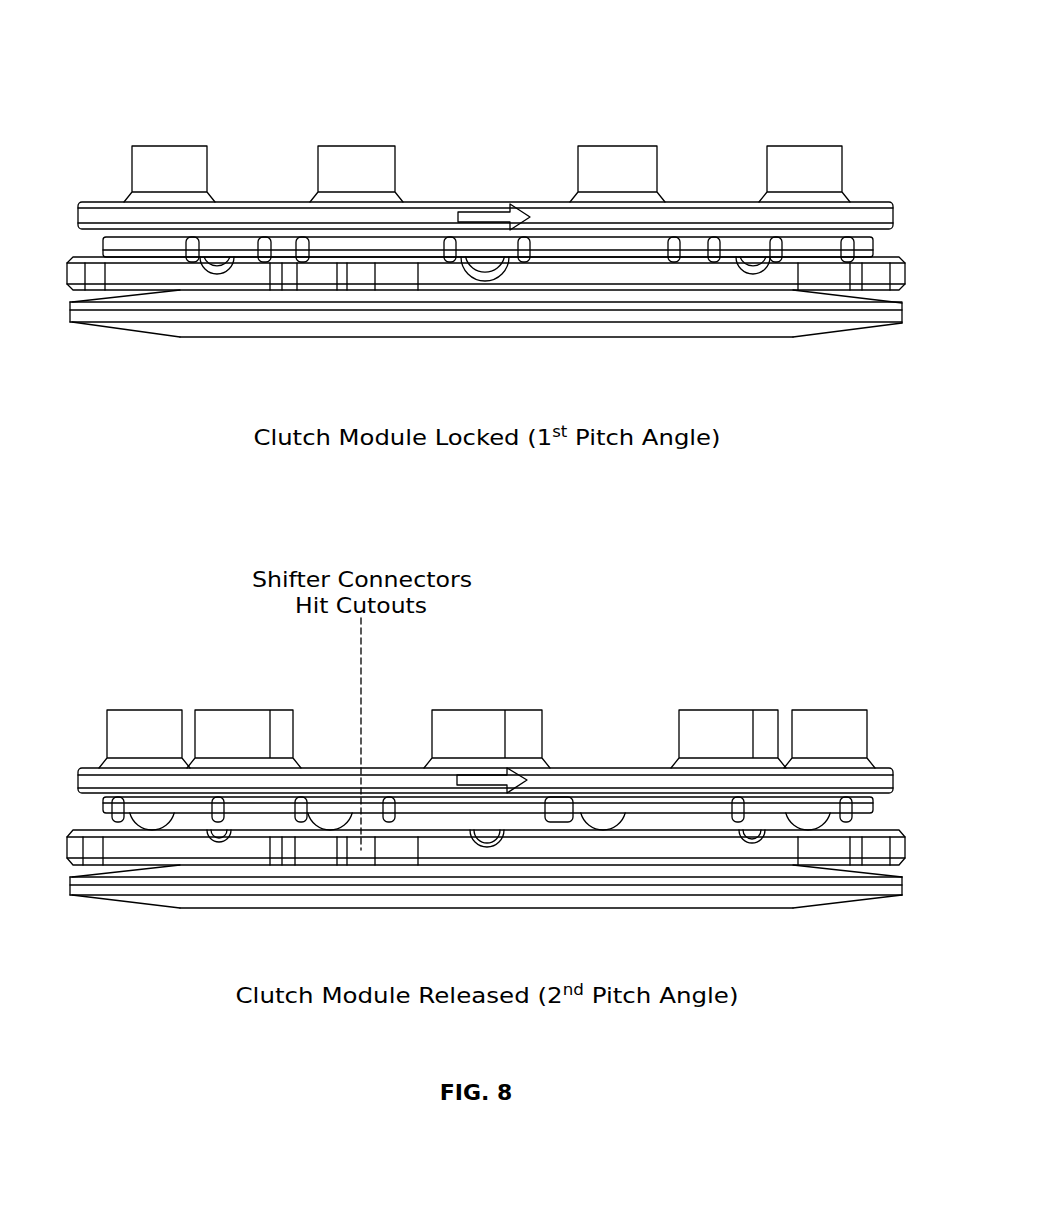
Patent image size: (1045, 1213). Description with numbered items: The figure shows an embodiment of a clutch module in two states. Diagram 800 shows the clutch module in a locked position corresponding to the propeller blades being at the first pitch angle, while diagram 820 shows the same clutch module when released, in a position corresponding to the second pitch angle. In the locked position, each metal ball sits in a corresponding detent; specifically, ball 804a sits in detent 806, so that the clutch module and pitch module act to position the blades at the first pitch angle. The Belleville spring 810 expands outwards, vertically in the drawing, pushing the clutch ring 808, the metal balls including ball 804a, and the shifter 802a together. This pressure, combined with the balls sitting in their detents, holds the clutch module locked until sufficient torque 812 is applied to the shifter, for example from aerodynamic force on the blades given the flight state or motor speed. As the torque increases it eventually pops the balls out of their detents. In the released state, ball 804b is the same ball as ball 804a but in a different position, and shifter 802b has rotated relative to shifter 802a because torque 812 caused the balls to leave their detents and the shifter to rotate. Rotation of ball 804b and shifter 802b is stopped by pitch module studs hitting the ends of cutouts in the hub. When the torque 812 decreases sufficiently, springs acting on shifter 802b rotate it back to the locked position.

The diagram 800 is at (812, 38).
The diagram 820 is at (812, 614).
The shifter 802a is at (700, 202).
The shifter 802b is at (633, 766).
The ball 804a is at (222, 258).
The ball 804b is at (337, 820).
The detent 806 is at (217, 268).
The clutch ring 808 is at (694, 828).
The Belleville spring 810 is at (838, 330).
The torque 812 is at (485, 207).